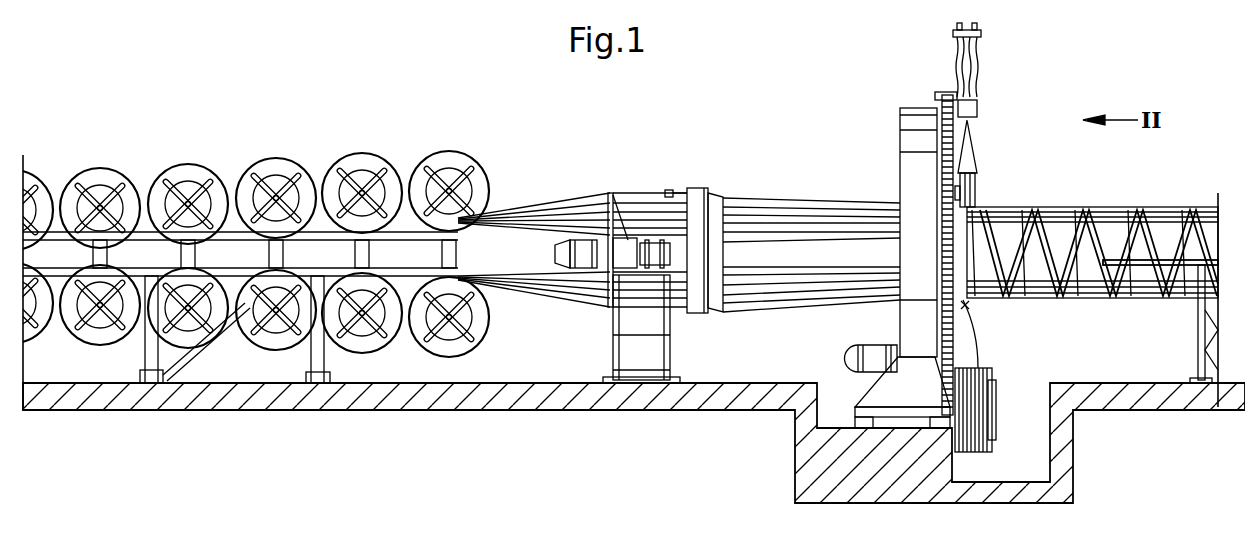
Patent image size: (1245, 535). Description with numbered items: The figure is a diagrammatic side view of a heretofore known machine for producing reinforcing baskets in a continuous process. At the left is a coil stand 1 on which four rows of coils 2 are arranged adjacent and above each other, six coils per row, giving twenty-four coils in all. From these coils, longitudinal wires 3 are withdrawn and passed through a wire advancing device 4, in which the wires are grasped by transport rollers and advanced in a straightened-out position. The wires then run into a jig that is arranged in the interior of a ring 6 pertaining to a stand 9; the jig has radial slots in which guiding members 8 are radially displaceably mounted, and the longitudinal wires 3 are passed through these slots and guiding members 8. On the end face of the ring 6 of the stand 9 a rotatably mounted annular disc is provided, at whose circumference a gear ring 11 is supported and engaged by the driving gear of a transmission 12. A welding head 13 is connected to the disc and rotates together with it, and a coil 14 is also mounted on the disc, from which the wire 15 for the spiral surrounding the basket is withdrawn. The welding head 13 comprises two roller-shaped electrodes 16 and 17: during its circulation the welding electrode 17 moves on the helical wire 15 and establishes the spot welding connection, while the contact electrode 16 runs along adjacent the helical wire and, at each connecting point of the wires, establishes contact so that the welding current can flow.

The coil stand 1 is at (323, 368).
The coils 2 is at (33, 177).
The longitudinal wires 3 is at (634, 192).
The wire advancing device 4 is at (703, 184).
The ring 6 is at (910, 138).
The guiding members 8 is at (973, 303).
The stand 9 is at (900, 319).
The gear ring 11 is at (945, 92).
The transmission 12 is at (843, 352).
The welding head 13 is at (969, 167).
The coil 14 is at (996, 448).
The wire 15 is at (980, 352).
The contact electrode 16 is at (955, 193).
The welding electrode 17 is at (977, 190).